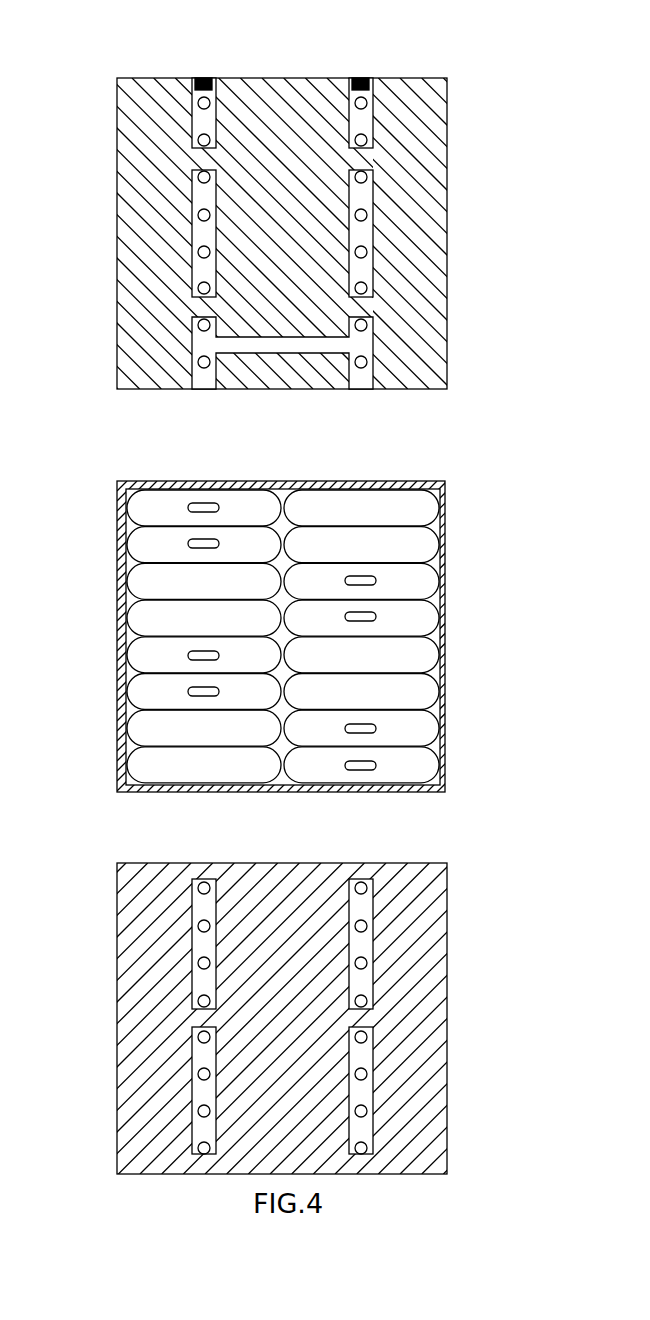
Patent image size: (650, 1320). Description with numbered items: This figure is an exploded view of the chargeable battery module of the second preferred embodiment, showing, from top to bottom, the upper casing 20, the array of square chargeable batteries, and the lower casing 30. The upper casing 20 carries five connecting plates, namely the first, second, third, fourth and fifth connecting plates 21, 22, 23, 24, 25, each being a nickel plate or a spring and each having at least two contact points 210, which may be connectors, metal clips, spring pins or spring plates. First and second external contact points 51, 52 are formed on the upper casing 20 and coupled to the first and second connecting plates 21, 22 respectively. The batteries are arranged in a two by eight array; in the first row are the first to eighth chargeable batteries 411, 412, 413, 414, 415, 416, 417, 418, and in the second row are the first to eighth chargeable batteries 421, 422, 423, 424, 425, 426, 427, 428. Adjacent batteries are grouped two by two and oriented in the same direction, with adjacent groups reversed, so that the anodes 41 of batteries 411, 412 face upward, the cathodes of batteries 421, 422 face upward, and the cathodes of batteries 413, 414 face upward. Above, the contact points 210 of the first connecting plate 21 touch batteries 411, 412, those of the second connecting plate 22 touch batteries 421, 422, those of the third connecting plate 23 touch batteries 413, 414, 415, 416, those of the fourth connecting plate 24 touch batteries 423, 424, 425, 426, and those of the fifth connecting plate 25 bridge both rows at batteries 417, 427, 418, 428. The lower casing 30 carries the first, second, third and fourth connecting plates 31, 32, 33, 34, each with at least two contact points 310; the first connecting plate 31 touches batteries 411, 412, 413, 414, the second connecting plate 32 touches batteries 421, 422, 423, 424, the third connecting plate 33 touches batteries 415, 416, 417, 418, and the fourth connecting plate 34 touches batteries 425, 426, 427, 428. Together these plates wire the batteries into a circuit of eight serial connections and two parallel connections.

The upper casing 20 is at (422, 224).
The first connecting plate 21 is at (194, 130).
The second connecting plate 22 is at (369, 124).
The third connecting plate 23 is at (194, 224).
The fourth connecting plate 24 is at (392, 262).
The fifth connecting plate 25 is at (202, 334).
The first external contact point 51 is at (204, 78).
The second external contact point 52 is at (361, 78).
The contact point 210 is at (198, 92).
The anode 41 is at (212, 540).
The first chargeable battery in the first row 411 is at (158, 497).
The second chargeable battery in the first row 412 is at (142, 540).
The third chargeable battery in the first row 413 is at (145, 578).
The fourth chargeable battery in the first row 414 is at (135, 610).
The fifth chargeable battery in the first row 415 is at (132, 650).
The sixth chargeable battery in the first row 416 is at (137, 693).
The seventh chargeable battery in the first row 417 is at (145, 735).
The eighth chargeable battery in the first row 418 is at (138, 773).
The first chargeable battery in the second row 421 is at (405, 497).
The second chargeable battery in the second row 422 is at (425, 541).
The third chargeable battery in the second row 423 is at (425, 578).
The fourth chargeable battery in the second row 424 is at (425, 615).
The fifth chargeable battery in the second row 425 is at (425, 651).
The sixth chargeable battery in the second row 426 is at (425, 694).
The seventh chargeable battery in the second row 427 is at (418, 735).
The eighth chargeable battery in the second row 428 is at (425, 773).
The lower casing 30 is at (402, 1018).
The first connecting plate 31 is at (200, 937).
The second connecting plate 32 is at (366, 947).
The third connecting plate 33 is at (199, 1092).
The fourth connecting plate 34 is at (366, 1084).
The contact point 310 is at (202, 887).